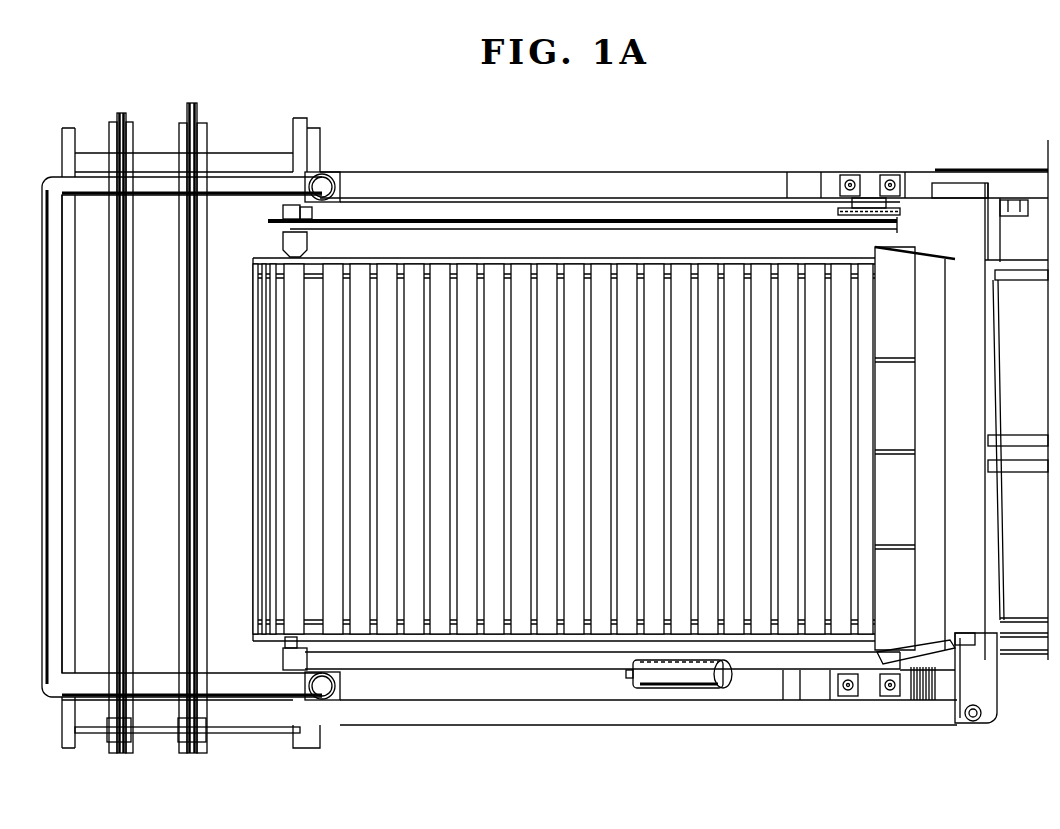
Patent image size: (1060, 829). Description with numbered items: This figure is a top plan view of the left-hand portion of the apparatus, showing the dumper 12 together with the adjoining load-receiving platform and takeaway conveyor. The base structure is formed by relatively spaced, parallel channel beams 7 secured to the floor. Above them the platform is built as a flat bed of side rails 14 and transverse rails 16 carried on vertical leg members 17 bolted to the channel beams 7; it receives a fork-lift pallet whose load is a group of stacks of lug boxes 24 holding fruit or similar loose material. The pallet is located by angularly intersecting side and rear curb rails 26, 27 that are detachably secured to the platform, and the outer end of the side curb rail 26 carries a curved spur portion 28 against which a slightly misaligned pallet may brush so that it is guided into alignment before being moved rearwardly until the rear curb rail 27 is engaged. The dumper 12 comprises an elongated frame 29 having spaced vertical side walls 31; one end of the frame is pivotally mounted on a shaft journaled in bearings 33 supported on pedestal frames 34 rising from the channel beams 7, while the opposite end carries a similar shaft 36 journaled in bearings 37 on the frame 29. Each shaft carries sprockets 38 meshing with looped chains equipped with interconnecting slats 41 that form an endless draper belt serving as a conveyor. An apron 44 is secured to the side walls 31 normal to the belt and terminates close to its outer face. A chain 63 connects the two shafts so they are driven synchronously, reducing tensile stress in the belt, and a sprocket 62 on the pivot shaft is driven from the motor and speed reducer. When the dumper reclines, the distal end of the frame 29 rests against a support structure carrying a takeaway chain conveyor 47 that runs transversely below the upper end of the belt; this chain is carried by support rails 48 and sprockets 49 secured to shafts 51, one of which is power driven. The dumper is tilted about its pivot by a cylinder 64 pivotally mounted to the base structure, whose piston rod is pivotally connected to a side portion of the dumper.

The channel beam 7 is at (471, 186).
The dumper 12 is at (600, 270).
The side rail 14 is at (1027, 190).
The transverse rail 16 is at (990, 232).
The vertical leg member 17 is at (1014, 208).
The lug box 24 is at (1013, 440).
The side curb rail 26 is at (993, 686).
The rear curb rail 27 is at (1015, 270).
The curved spur portion 28 is at (982, 718).
The frame 29 is at (510, 660).
The side wall 31 is at (900, 652).
The bearing 33 is at (868, 185).
The pedestal frame 34 is at (803, 185).
The shaft 36 is at (283, 213).
The bearing 37 is at (283, 244).
The sprocket 38 is at (312, 212).
The slat 41 is at (290, 428).
The apron 44 is at (935, 374).
The takeaway chain conveyor 47 is at (190, 357).
The support rail 48 is at (185, 582).
The sprocket 49 is at (195, 724).
The shaft 51 is at (224, 733).
The sprocket 62 is at (900, 212).
The chain 63 is at (499, 225).
The cylinder 64 is at (688, 690).